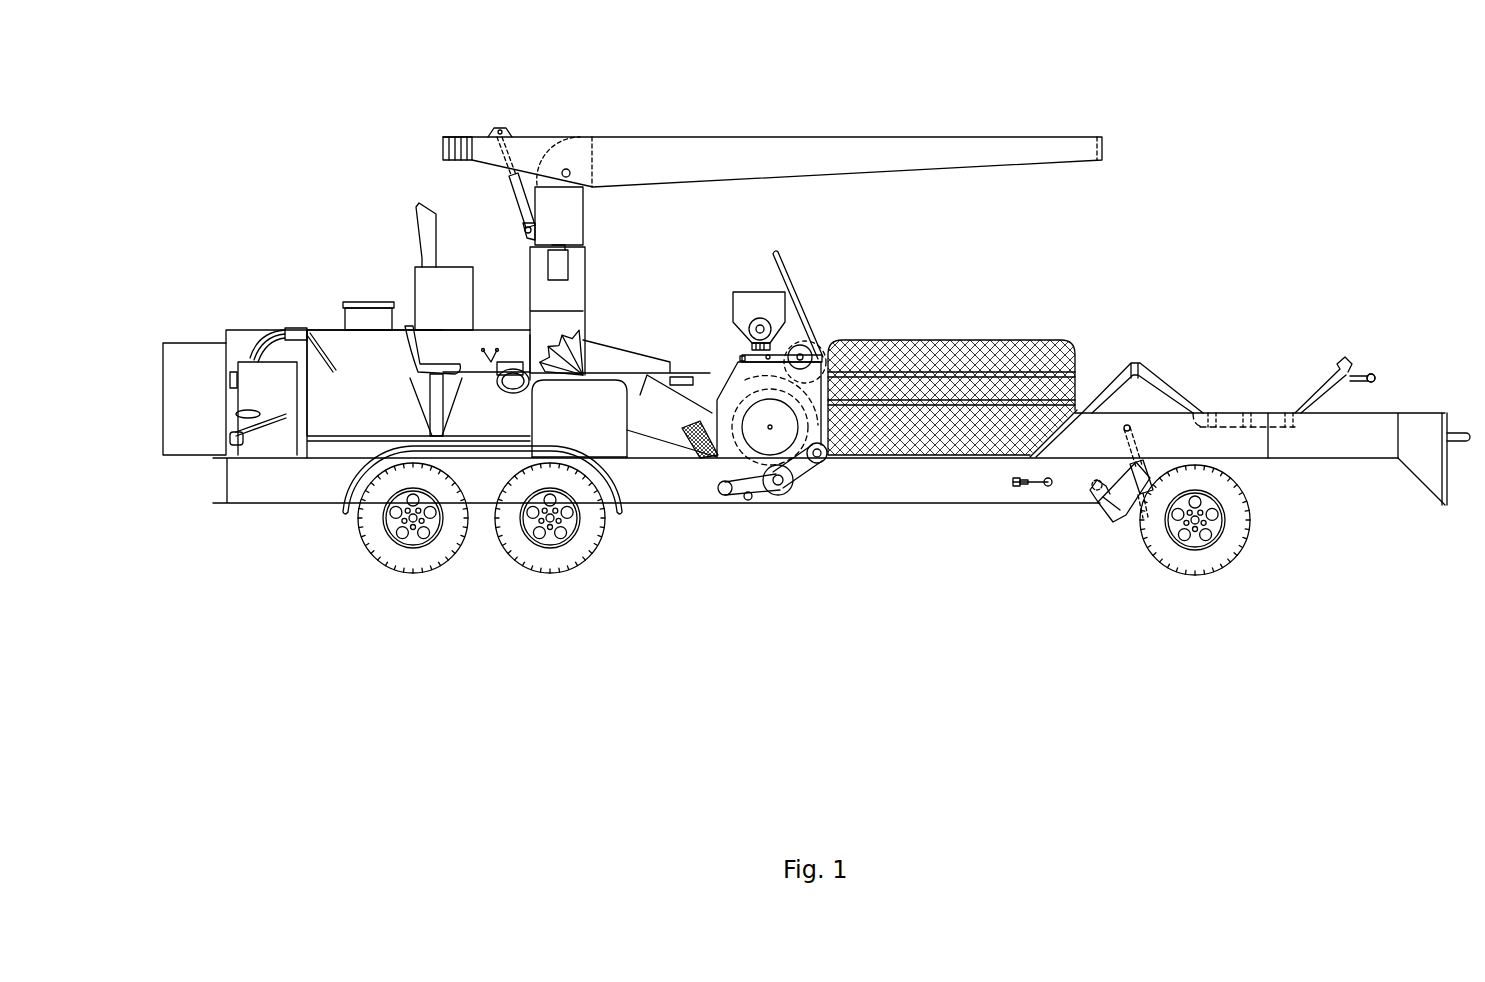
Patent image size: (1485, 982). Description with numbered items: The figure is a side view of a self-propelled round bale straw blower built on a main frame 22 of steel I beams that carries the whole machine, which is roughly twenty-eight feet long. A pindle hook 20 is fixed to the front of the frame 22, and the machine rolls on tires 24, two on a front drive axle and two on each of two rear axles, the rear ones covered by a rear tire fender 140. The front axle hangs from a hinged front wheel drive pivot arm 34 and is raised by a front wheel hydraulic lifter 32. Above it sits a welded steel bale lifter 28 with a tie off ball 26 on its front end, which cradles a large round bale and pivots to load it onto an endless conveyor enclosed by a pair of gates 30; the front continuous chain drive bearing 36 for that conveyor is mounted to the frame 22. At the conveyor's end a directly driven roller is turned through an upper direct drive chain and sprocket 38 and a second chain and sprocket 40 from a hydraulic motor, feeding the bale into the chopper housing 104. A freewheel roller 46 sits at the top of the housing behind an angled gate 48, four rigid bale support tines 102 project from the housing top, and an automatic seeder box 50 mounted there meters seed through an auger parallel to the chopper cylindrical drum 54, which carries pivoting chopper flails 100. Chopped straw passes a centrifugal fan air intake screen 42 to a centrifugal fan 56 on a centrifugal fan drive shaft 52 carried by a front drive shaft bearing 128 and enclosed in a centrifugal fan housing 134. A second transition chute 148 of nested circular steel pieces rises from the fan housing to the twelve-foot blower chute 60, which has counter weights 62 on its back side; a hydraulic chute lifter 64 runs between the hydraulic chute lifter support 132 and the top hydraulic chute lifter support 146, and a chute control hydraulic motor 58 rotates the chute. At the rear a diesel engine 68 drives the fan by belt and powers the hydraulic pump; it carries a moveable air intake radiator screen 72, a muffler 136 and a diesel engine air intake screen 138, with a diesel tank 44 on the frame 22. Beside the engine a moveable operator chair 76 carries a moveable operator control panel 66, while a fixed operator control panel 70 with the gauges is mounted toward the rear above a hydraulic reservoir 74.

The pindle hook 20 is at (1470, 430).
The main frame 22 is at (1362, 462).
The tires 24 is at (410, 577).
The tie off ball 26 is at (1372, 372).
The bale lifter 28 is at (1325, 382).
The gates 30 is at (1067, 337).
The front wheel hydraulic lifter 32 is at (1117, 497).
The front wheel drive pivot arm 34 is at (1140, 483).
The front continuous chain drive bearing 36 is at (1030, 484).
The upper direct drive chain and sprocket 38 is at (832, 466).
The second chain and sprocket 40 is at (790, 500).
The centrifugal fan air intake screen 42 is at (703, 460).
The diesel tank 44 is at (636, 400).
The freewheel roller 46 is at (806, 338).
The gate 48 is at (788, 262).
The automatic seeder box 50 is at (760, 290).
The centrifugal fan drive shaft 52 is at (700, 380).
The chopper cylindrical drum 54 is at (758, 415).
The centrifugal fan 56 is at (597, 352).
The chute control hydraulic motor 58 is at (590, 258).
The blower chute 60 is at (793, 135).
The counter weights 62 is at (457, 137).
The hydraulic chute lifter 64 is at (513, 205).
The moveable operator control panel 66 is at (513, 365).
The diesel engine 68 is at (345, 355).
The fixed operator control panel 70 is at (323, 328).
The moveable air intake radiator screen 72 is at (210, 342).
The hydraulic reservoir 74 is at (247, 392).
The moveable operator chair 76 is at (410, 352).
The chopper flails 100 is at (710, 457).
The bale support tines 102 is at (818, 340).
The chopper housing 104 is at (700, 450).
The front drive shaft bearing 128 is at (588, 430).
The hydraulic chute lifter support 132 is at (527, 232).
The centrifugal fan housing 134 is at (570, 268).
The muffler 136 is at (427, 285).
The diesel engine air intake screen 138 is at (368, 305).
The rear tire fender 140 is at (343, 513).
The top hydraulic chute lifter support 146 is at (500, 130).
The second transition chute 148 is at (665, 420).